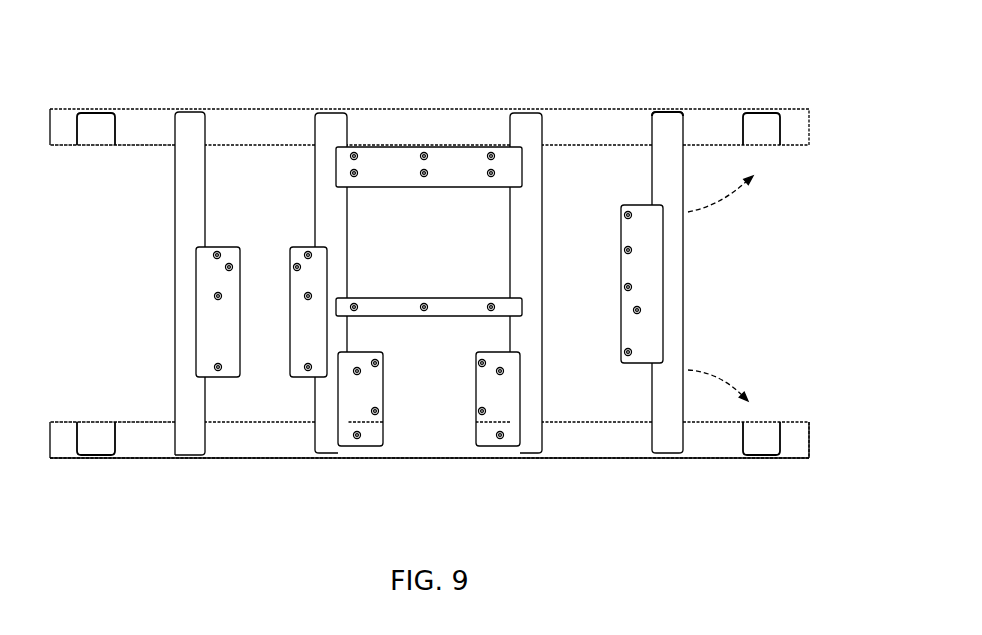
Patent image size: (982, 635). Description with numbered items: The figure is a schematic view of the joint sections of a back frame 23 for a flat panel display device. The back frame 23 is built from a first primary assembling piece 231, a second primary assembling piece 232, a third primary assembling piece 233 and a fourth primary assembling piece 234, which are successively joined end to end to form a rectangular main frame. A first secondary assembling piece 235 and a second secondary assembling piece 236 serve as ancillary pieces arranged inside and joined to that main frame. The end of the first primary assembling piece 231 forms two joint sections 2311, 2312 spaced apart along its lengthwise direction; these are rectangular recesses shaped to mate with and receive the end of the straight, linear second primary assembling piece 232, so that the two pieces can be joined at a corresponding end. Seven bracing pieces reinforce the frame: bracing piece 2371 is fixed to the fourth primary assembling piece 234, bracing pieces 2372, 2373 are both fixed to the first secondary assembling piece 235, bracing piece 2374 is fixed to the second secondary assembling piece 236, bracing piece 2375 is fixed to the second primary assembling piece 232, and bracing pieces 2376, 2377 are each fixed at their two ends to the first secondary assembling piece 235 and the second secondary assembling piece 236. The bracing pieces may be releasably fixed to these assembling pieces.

The back frame 23 is at (444, 256).
The first primary assembling piece 231 is at (444, 111).
The joint section 2311 is at (763, 132).
The joint section 2312 is at (686, 109).
The second primary assembling piece 232 is at (704, 262).
The third primary assembling piece 233 is at (417, 446).
The fourth primary assembling piece 234 is at (182, 285).
The first secondary assembling piece 235 is at (340, 255).
The second secondary assembling piece 236 is at (530, 265).
The bracing piece 2371 is at (205, 267).
The bracing piece 2372 is at (318, 267).
The bracing piece 2373 is at (346, 383).
The bracing piece 2374 is at (511, 383).
The bracing piece 2375 is at (628, 333).
The bracing piece 2376 is at (455, 300).
The bracing piece 2377 is at (473, 168).